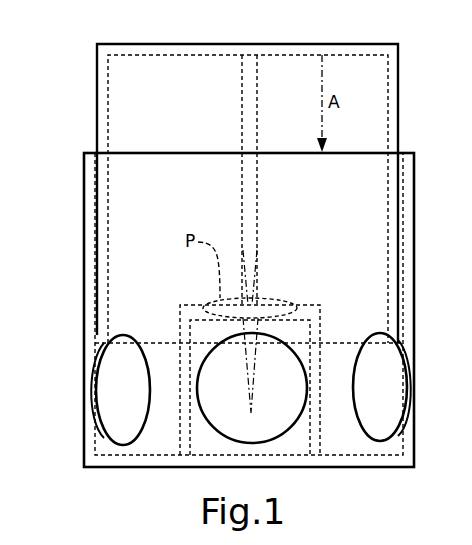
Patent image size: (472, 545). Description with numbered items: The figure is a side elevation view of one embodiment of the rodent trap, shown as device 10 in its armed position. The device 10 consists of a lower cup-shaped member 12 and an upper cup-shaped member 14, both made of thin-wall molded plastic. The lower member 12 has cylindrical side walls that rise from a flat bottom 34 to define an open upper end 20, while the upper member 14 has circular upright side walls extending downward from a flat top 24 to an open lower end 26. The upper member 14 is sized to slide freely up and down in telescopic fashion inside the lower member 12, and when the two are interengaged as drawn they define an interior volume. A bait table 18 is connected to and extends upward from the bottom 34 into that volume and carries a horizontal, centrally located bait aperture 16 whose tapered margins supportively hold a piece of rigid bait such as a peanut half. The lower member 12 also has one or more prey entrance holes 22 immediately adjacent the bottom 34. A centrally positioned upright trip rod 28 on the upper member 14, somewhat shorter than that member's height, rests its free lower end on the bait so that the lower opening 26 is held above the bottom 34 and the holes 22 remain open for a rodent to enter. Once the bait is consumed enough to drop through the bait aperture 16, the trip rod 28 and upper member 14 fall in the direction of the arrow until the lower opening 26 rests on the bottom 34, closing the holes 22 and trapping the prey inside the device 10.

The device 10 is at (78, 78).
The lower cup-shaped member 12 is at (414, 228).
The upper cup-shaped member 14 is at (398, 97).
The bait aperture 16 is at (281, 314).
The bait table 18 is at (313, 305).
The open upper end 20 is at (369, 151).
The prey entrance holes 22 is at (357, 383).
The flat top 24 is at (301, 44).
The open lower end 26 is at (160, 347).
The trip rod 28 is at (238, 108).
The flat bottom 34 is at (365, 468).